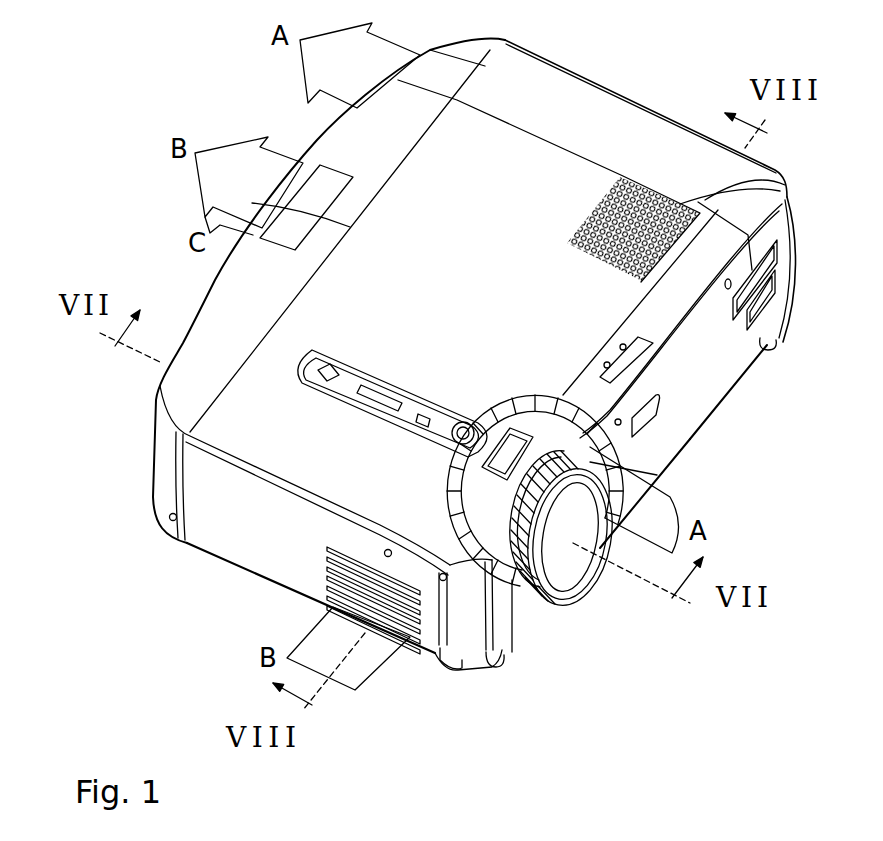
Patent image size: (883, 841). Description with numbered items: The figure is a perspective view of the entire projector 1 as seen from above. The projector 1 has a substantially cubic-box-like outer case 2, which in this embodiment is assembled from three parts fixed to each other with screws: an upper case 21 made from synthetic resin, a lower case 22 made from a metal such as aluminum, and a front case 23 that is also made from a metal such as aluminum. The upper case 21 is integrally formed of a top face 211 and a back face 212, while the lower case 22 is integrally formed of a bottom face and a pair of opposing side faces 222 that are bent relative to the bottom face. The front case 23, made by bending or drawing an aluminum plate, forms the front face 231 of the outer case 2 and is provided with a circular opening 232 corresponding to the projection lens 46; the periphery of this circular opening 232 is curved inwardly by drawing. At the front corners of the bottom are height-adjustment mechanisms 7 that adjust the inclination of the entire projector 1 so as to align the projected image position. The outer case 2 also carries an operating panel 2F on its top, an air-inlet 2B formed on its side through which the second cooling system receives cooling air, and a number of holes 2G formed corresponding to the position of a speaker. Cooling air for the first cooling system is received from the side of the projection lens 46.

The projector 1 is at (692, 56).
The outer case 2 is at (660, 133).
The upper case 21 is at (525, 68).
The top face 211 is at (600, 107).
The back face 212 is at (163, 477).
The lower case 22 is at (233, 547).
The side face 222 is at (287, 573).
The front case 23 is at (685, 428).
The front face 231 is at (718, 382).
The circular opening 232 is at (662, 472).
The operating panel 2F is at (410, 406).
The air-inlet 2B is at (405, 657).
The holes 2G is at (788, 186).
The projection lens 46 is at (571, 583).
The height-adjustment mechanism 7 is at (779, 349).